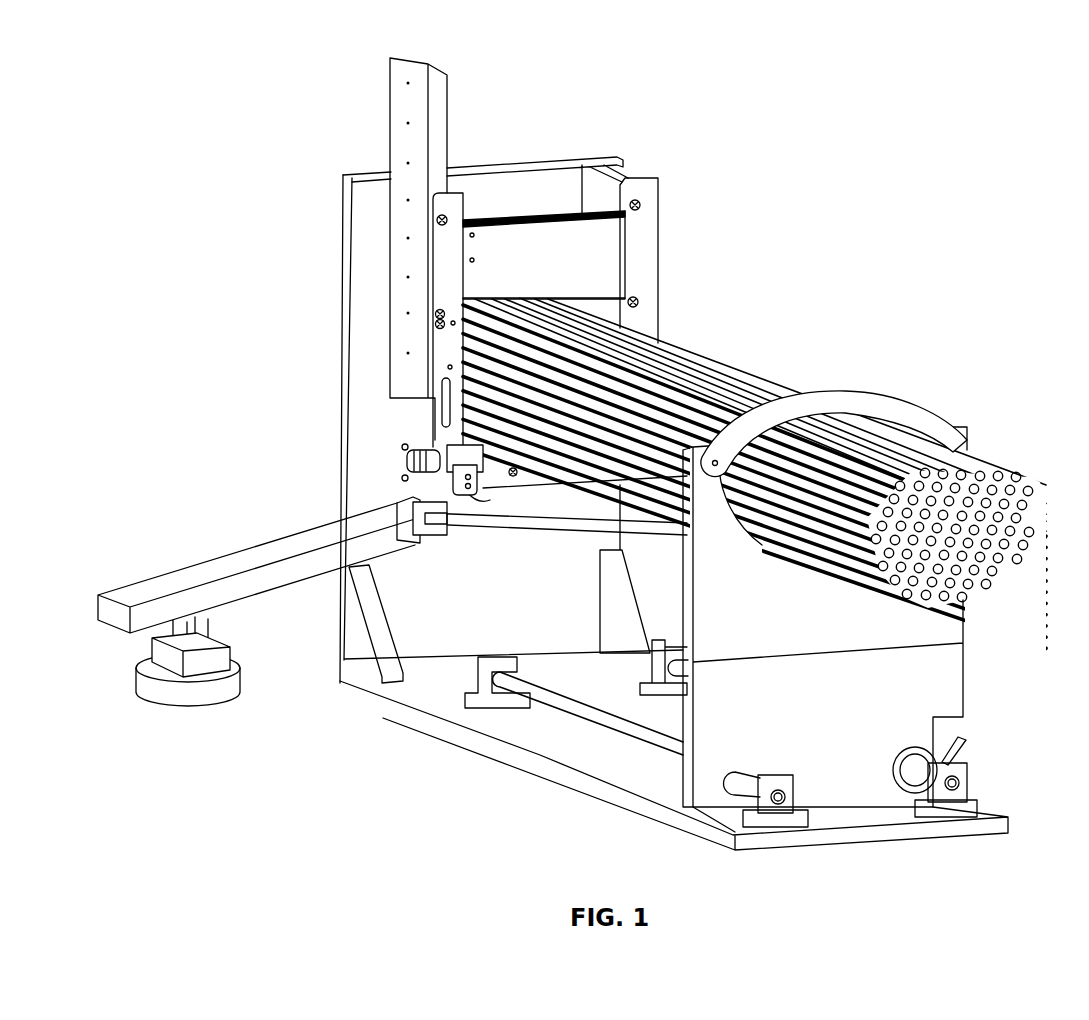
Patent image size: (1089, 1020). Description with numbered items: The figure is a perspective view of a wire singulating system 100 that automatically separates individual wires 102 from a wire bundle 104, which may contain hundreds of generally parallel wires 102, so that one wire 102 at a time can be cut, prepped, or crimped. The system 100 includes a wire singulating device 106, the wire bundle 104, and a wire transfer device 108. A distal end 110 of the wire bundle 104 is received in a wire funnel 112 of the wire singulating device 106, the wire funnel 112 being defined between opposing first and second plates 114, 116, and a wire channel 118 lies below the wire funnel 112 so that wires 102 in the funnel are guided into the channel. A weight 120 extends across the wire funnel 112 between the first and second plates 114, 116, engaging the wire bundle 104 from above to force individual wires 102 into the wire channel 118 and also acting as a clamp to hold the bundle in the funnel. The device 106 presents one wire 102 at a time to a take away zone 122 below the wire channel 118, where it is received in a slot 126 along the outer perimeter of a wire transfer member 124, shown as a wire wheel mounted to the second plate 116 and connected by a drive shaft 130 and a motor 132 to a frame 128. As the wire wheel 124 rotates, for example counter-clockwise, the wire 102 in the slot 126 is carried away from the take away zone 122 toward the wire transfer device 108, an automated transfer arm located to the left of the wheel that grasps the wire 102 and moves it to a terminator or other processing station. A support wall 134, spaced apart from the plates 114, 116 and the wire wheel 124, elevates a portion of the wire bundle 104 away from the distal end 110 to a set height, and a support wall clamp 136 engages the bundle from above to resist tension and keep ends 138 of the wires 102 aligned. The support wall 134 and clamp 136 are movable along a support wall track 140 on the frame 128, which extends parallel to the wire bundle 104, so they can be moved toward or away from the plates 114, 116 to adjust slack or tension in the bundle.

The wire singulating system 100 is at (846, 158).
The wire 102 is at (728, 368).
The wire bundle 104 is at (779, 373).
The wire singulating device 106 is at (665, 192).
The wire transfer device 108 is at (221, 541).
The distal end 110 is at (482, 296).
The wire funnel 112 is at (542, 297).
The first plate 114 is at (447, 345).
The second plate 116 is at (647, 313).
The wire channel 118 is at (456, 407).
The weight 120 is at (523, 247).
The take away zone 122 is at (474, 459).
The wire transfer member 124 is at (425, 494).
The slot 126 is at (435, 460).
The frame 128 is at (353, 633).
The drive shaft 130 is at (453, 476).
The motor 132 is at (413, 452).
The support wall 134 is at (917, 685).
The support wall clamp 136 is at (910, 417).
The ends 138 is at (468, 306).
The support wall track 140 is at (630, 729).